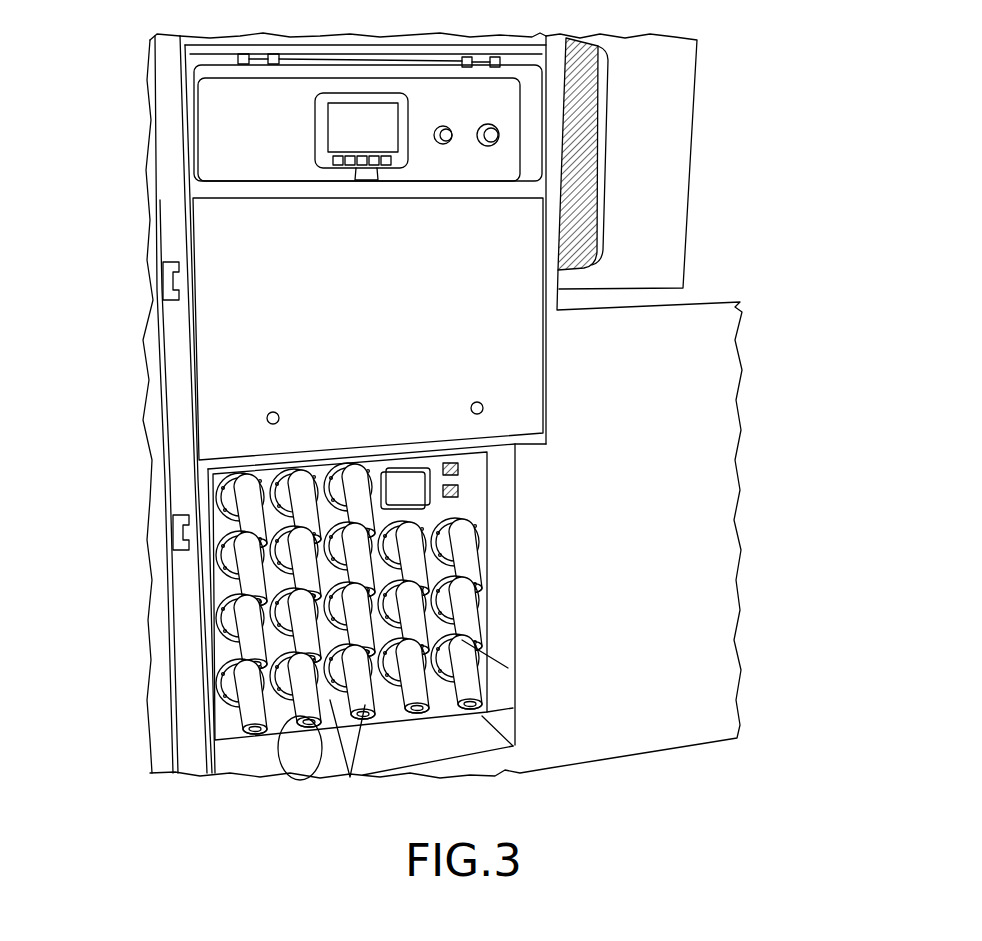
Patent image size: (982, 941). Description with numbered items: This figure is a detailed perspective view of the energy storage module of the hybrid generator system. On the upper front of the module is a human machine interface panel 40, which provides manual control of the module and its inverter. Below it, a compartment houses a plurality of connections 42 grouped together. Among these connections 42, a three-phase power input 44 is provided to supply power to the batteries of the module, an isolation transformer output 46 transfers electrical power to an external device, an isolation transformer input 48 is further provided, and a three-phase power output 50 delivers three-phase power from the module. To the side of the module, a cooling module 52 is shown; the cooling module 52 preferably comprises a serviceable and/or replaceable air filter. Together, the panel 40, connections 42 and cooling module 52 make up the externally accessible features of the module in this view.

The human machine interface (HMI) panel 40 is at (320, 122).
The connections 42 is at (530, 442).
The three-phase power input 44 is at (230, 500).
The isolation transformer output 46 is at (228, 578).
The isolation transformer input 48 is at (228, 658).
The three-phase power output 50 is at (233, 724).
The cooling module 52 is at (668, 102).